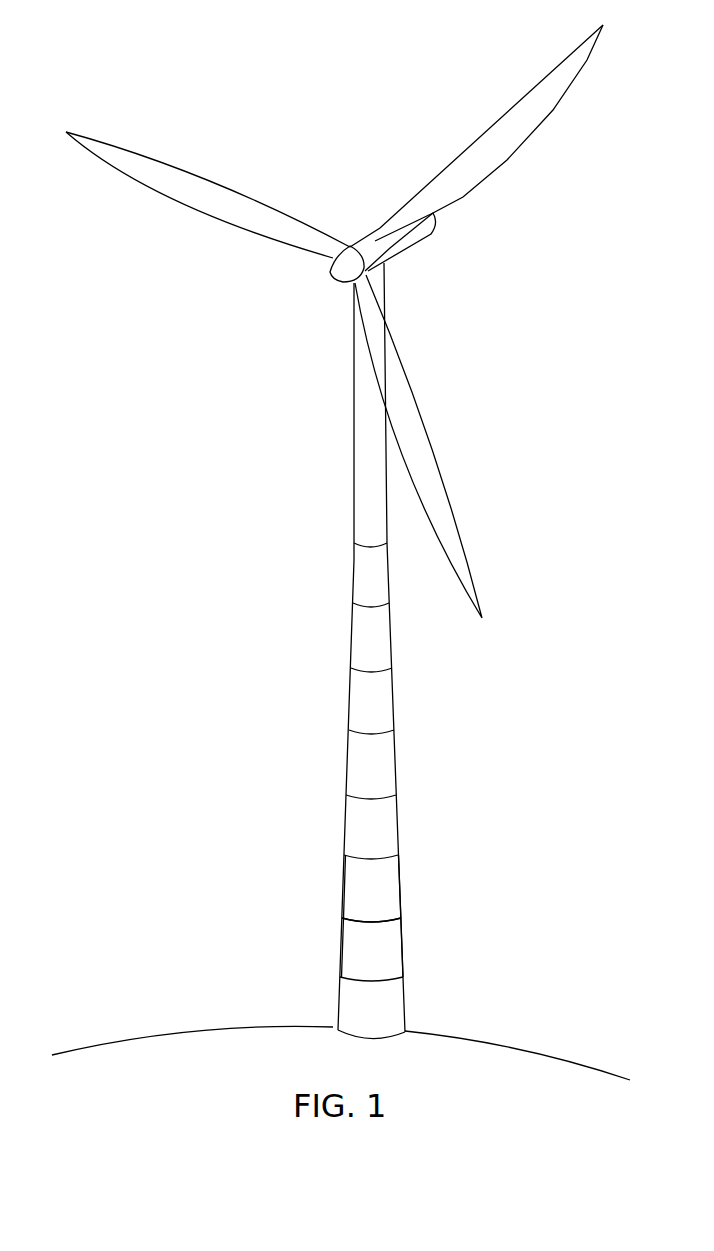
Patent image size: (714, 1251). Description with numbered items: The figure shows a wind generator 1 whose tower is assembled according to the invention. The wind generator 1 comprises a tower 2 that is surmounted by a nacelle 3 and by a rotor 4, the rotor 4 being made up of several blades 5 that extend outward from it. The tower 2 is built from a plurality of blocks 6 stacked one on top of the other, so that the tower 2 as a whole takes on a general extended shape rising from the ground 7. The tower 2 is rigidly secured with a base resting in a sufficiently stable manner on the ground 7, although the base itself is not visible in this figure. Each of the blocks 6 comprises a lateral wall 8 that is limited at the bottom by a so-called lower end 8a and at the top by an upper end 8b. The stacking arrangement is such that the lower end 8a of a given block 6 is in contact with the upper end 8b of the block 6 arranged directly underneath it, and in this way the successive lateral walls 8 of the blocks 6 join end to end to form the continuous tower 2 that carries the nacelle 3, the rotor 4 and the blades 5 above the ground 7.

The wind generator 1 is at (95, 447).
The tower 2 is at (350, 697).
The nacelle 3 is at (398, 248).
The rotor 4 is at (335, 276).
The blades 5 is at (443, 508).
The blocks 6 is at (382, 825).
The ground 7 is at (200, 1052).
The lateral wall 8 is at (352, 883).
The lower end 8a is at (348, 913).
The upper end 8b is at (348, 856).